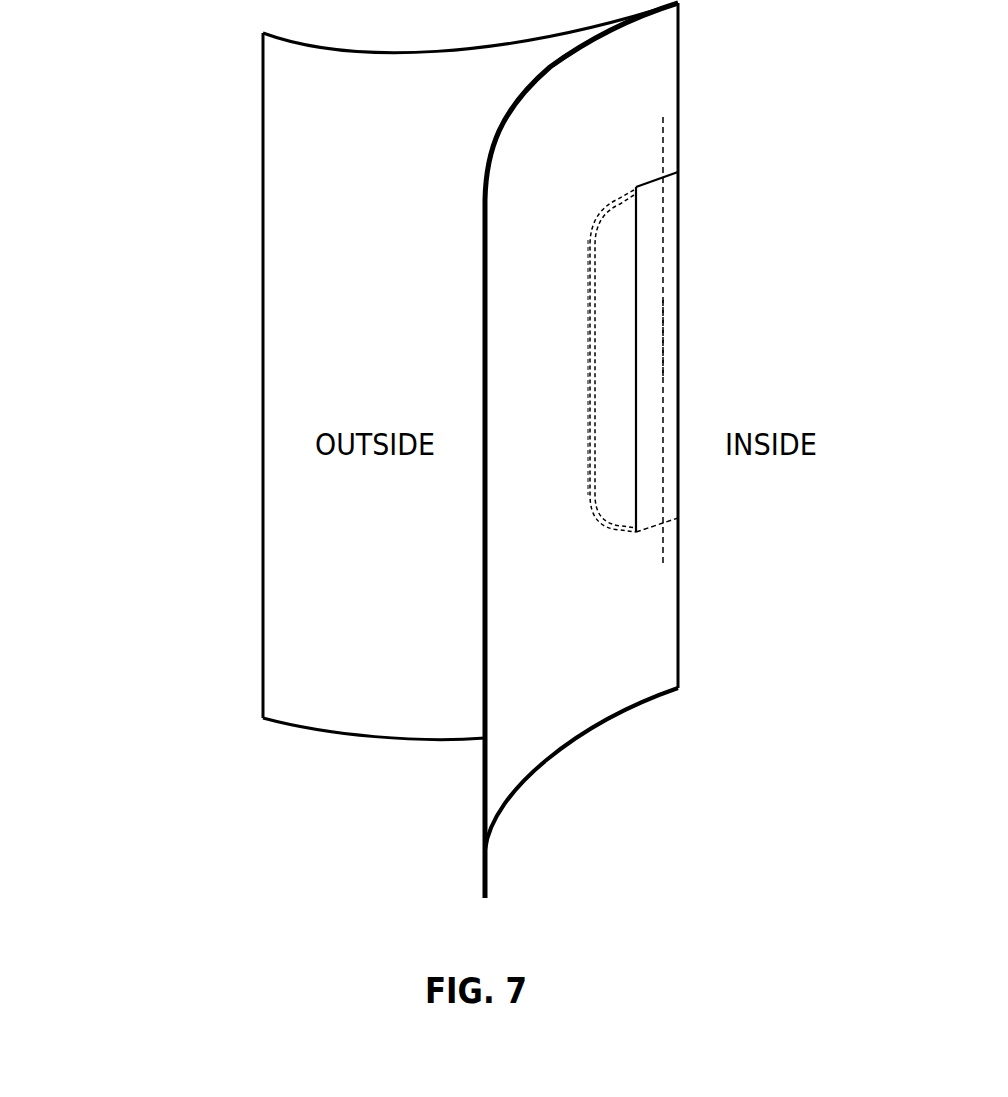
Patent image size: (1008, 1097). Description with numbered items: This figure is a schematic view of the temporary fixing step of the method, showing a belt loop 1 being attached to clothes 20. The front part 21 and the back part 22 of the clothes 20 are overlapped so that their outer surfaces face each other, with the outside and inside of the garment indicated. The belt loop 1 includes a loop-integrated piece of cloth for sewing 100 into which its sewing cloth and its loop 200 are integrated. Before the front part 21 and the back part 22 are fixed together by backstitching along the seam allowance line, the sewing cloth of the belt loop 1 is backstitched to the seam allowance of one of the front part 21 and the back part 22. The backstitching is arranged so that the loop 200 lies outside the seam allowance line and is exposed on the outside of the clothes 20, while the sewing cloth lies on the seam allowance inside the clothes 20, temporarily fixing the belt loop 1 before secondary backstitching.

The belt loop 1 is at (688, 340).
The clothes 20 is at (222, 332).
The front part 21 is at (495, 778).
The back part 22 is at (287, 92).
The loop-integrated piece of cloth for sewing 100 is at (650, 180).
The loop 200 is at (590, 487).